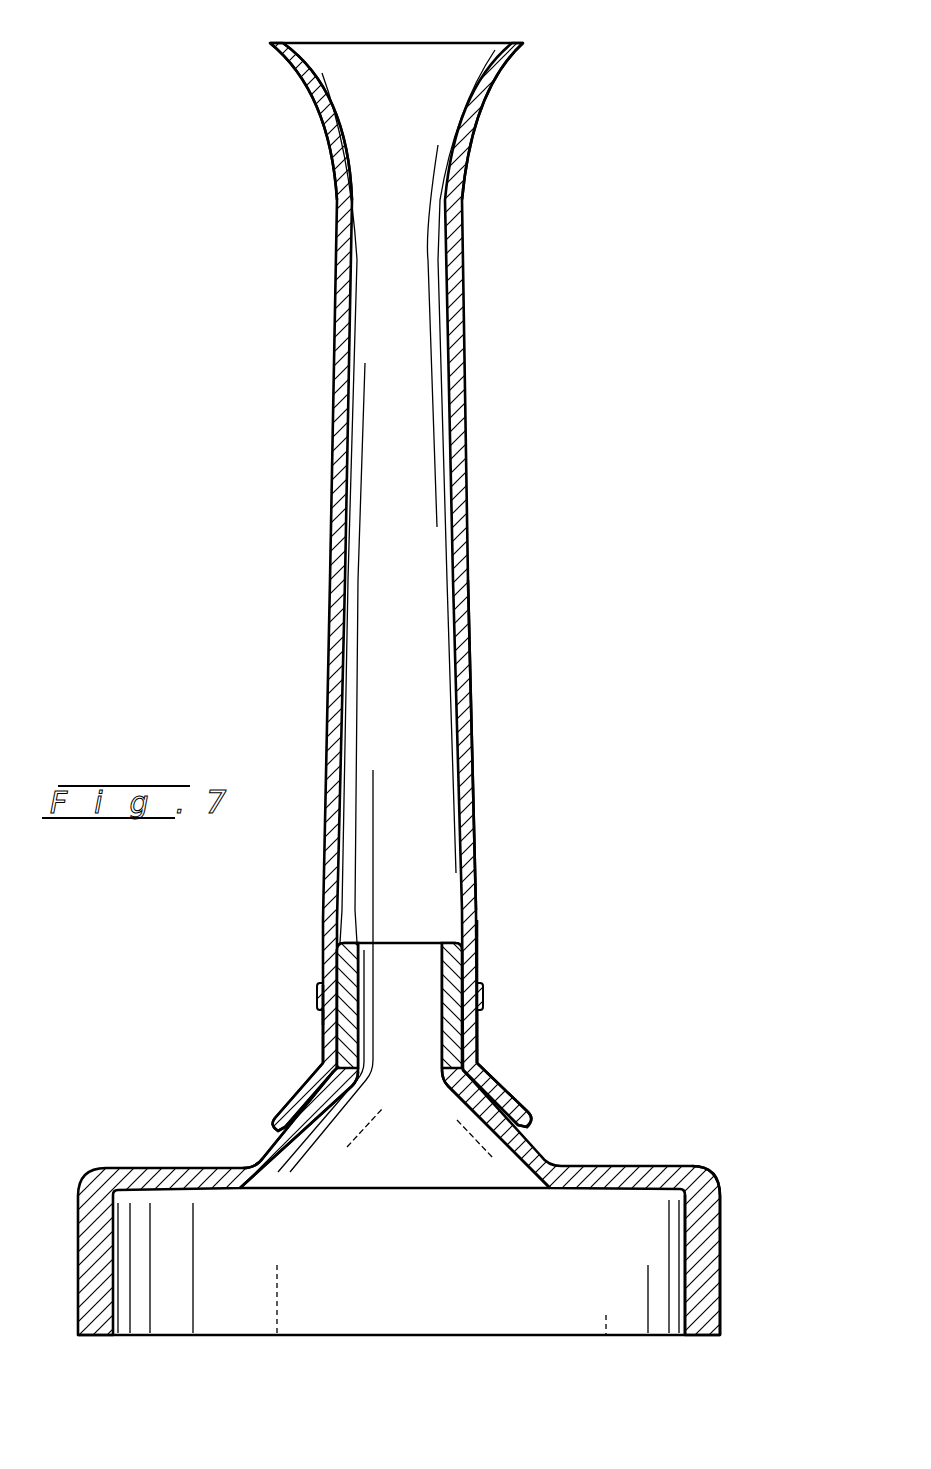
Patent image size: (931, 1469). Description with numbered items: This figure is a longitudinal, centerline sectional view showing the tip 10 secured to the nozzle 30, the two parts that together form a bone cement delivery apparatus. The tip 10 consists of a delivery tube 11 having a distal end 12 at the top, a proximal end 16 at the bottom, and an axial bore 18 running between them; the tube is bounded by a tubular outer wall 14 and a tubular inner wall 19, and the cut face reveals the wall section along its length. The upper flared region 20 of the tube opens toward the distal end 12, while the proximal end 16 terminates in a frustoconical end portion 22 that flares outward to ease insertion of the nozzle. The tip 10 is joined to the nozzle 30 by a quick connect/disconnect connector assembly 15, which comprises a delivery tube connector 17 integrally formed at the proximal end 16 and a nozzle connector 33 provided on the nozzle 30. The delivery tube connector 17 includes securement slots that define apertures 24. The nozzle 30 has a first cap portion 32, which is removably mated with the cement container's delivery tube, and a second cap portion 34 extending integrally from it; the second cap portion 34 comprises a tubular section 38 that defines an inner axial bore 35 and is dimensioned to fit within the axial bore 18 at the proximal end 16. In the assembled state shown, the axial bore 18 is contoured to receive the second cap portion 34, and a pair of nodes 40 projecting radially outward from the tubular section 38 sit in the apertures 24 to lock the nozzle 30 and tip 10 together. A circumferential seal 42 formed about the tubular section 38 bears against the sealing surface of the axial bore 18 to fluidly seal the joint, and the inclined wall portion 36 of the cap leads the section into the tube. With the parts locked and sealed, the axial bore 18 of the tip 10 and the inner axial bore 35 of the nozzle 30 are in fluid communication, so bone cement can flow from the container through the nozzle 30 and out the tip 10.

The tip 10 is at (236, 300).
The delivery tube 11 is at (322, 561).
The distal end 12 is at (507, 124).
The tubular outer wall 14 is at (470, 528).
The connector assembly 15 is at (226, 1015).
The proximal end 16 is at (494, 934).
The delivery tube connector 17 is at (483, 1038).
The axial bore 18 is at (367, 73).
The tubular inner wall 19 is at (460, 780).
The flared wall 20 is at (306, 102).
The frustoconical end portion 22 is at (303, 1088).
The apertures 24 is at (294, 980).
The nozzle 30 is at (107, 1148).
The first cap portion 32 is at (744, 1228).
The nozzle connector 33 is at (425, 940).
The second cap portion 34 is at (547, 1130).
The inner axial bore 35 is at (378, 1210).
The inclined plate portion 36 is at (270, 1158).
The tubular section 38 is at (450, 1022).
The nodes 40 is at (320, 994).
The circumferential seal 42 is at (333, 954).